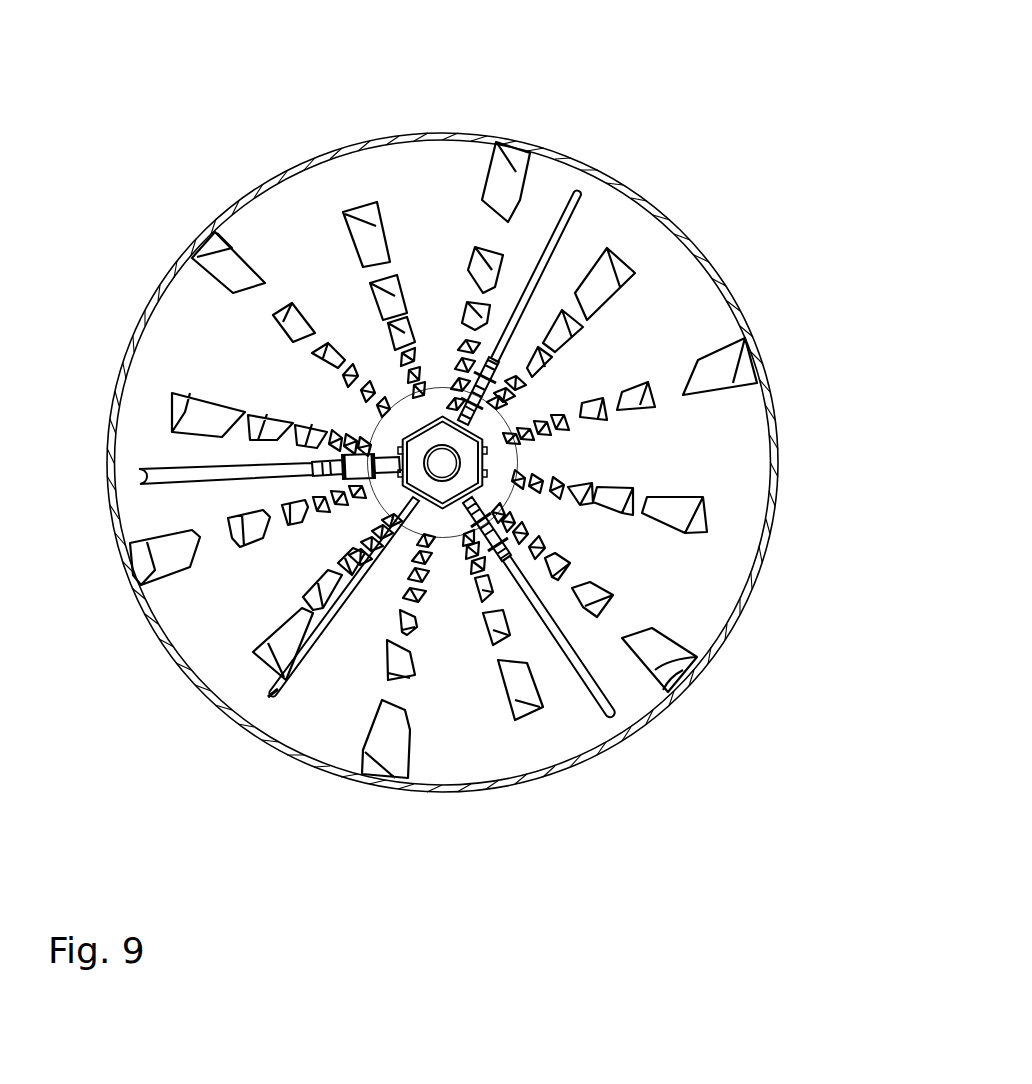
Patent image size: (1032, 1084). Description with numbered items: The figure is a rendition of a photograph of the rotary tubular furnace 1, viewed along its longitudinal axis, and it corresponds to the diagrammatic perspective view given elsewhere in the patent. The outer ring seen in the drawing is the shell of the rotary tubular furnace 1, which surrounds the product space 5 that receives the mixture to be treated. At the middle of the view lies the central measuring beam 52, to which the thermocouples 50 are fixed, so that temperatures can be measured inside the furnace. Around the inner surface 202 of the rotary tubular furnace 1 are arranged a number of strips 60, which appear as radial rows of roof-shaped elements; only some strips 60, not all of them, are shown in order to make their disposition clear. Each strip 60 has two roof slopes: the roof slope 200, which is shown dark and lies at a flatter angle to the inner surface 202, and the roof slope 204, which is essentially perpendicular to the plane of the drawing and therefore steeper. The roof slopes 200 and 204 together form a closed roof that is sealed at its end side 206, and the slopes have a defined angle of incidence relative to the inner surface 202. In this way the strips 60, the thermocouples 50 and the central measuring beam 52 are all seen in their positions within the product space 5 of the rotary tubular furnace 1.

The rotary tubular furnace 1 is at (303, 778).
The product space 5 is at (460, 732).
The thermocouples 50 is at (612, 718).
The central measuring beam 52 is at (442, 463).
The strips 60 is at (703, 518).
The roof slope 200 is at (721, 348).
The inner surface 202 is at (177, 597).
The roof slope 204 is at (648, 684).
The end side 206 is at (686, 680).